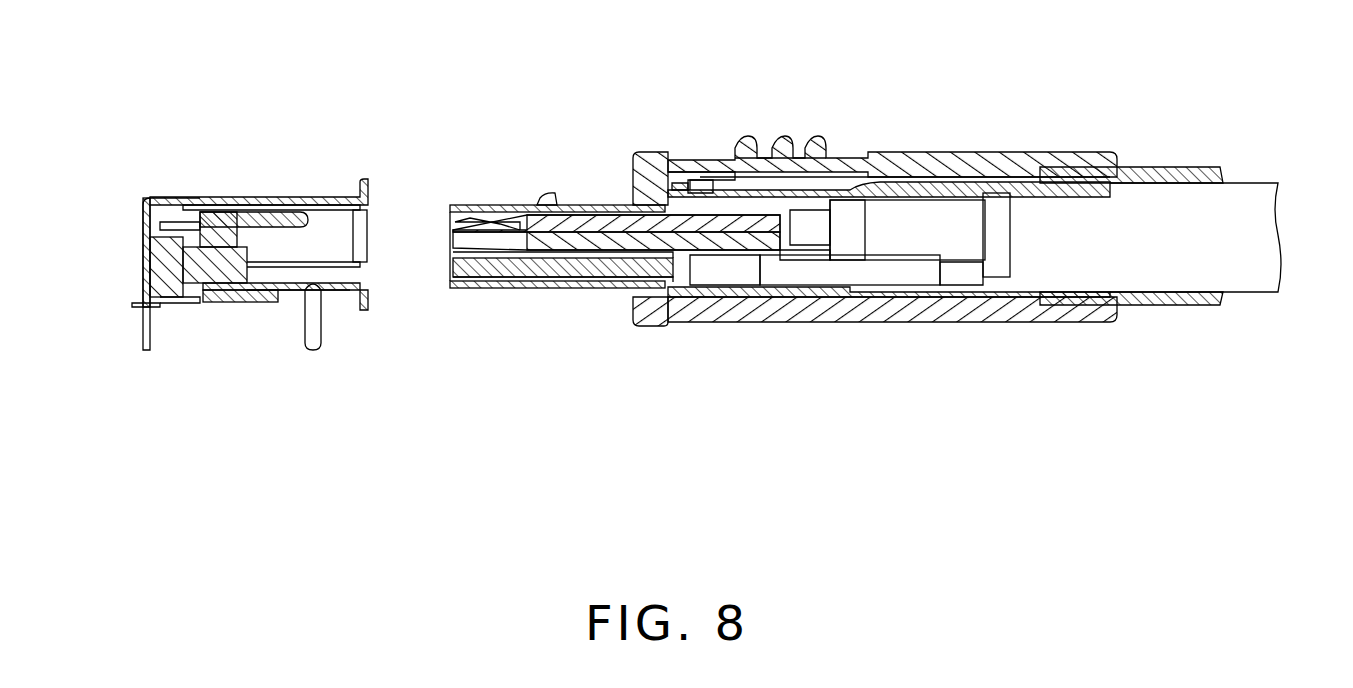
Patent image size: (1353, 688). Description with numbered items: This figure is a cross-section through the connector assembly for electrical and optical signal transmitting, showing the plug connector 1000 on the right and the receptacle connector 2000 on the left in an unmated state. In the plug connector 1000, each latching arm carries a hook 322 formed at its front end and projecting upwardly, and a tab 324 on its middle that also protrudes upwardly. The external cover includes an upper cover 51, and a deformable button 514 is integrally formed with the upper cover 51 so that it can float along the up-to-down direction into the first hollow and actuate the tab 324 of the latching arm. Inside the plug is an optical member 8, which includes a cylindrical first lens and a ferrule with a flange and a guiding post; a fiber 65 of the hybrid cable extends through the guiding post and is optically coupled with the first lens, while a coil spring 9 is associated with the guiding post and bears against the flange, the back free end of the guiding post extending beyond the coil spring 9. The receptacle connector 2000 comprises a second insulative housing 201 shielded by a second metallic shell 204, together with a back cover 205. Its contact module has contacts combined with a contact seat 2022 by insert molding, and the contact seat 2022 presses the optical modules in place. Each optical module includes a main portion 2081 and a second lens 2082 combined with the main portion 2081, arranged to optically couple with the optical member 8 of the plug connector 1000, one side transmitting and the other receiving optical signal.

The receptacle connector 2000 is at (248, 168).
The second insulative housing 201 is at (210, 206).
The back cover 205 is at (305, 198).
The second metallic shell 204 is at (146, 223).
The contact seat 2022 is at (170, 282).
The main portion 2081 is at (216, 298).
The second lens 2082 is at (247, 275).
The plug connector 1000 is at (848, 118).
The hook 322 is at (549, 196).
The tab 324 is at (708, 178).
The deformable button 514 is at (766, 155).
The upper cover 51 is at (910, 165).
The optical member 8 is at (496, 290).
The coil spring 9 is at (563, 290).
The fiber 65 is at (620, 298).